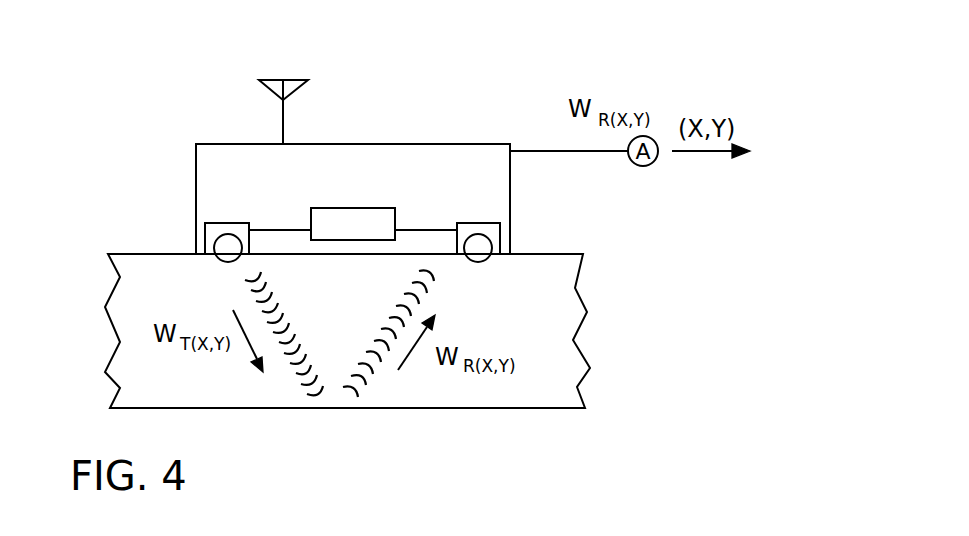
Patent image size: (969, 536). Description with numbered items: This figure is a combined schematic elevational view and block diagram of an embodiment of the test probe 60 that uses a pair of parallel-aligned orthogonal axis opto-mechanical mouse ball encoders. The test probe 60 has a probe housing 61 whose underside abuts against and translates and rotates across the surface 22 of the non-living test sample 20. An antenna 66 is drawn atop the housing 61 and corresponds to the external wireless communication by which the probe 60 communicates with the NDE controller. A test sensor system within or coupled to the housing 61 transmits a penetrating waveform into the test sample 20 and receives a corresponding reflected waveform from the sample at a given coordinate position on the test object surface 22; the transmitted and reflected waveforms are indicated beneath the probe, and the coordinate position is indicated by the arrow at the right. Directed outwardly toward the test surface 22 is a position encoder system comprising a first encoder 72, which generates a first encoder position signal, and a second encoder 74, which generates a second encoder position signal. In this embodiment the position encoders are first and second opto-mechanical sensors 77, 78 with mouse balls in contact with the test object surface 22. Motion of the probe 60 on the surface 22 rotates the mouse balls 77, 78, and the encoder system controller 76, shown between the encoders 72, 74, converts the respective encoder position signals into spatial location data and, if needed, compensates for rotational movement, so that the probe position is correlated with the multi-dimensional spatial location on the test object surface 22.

The test sample 20 is at (428, 437).
The surface 22 is at (122, 254).
The test probe 60 is at (484, 124).
The probe housing 61 is at (229, 144).
The antenna 66 is at (283, 120).
The first encoder 72 is at (217, 228).
The second encoder 74 is at (490, 230).
The encoder system controller 76 is at (342, 212).
The first opto-mechanical sensor 77 is at (223, 257).
The second opto-mechanical sensor 78 is at (480, 258).